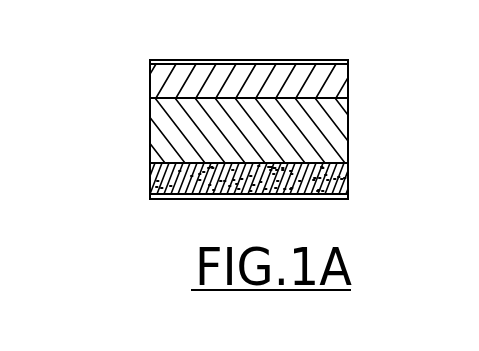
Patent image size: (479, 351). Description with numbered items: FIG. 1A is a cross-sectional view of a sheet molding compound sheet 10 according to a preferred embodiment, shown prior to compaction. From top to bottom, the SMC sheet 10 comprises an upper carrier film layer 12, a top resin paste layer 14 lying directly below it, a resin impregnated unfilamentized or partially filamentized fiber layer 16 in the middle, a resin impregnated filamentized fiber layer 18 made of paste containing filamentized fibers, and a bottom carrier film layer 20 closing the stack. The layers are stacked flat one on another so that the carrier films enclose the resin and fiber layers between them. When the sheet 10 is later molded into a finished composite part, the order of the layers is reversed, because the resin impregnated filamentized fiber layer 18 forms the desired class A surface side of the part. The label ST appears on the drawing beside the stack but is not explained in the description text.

The sheet molding compound sheet 10 is at (257, 26).
The upper carrier film layer 12 is at (348, 62).
The top resin paste layer 14 is at (348, 80).
The resin impregnated unfilamentized or partially filamentized fiber layer 16 is at (348, 120).
The resin impregnated filamentized fiber layer 18 is at (348, 176).
The bottom carrier film layer 20 is at (348, 201).
The stack ST is at (150, 180).